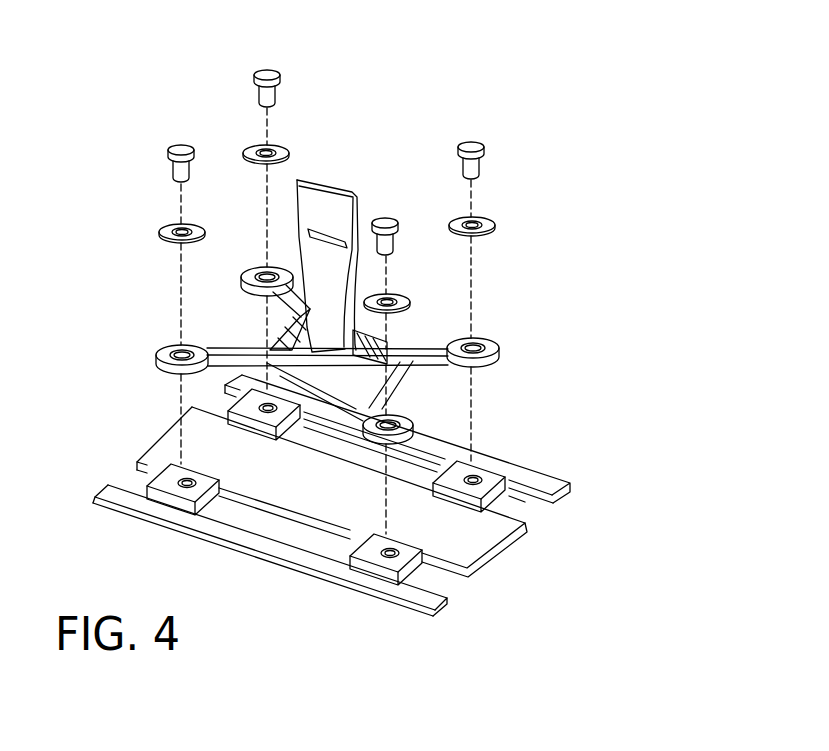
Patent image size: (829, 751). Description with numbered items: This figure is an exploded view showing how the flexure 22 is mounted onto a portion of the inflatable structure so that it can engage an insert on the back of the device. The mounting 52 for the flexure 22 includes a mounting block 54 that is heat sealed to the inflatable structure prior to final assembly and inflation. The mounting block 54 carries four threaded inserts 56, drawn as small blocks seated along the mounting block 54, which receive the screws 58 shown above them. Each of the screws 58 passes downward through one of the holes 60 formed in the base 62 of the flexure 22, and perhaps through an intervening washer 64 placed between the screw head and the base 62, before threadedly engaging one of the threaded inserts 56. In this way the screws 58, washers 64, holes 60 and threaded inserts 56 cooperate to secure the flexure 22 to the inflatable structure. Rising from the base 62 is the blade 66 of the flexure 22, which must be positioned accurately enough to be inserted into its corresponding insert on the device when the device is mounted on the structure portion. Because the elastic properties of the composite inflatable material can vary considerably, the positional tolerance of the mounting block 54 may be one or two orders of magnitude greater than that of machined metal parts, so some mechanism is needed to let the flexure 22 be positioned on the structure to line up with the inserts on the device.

The flexure 22 is at (138, 206).
The mounting 52 is at (607, 466).
The mounting block 54 is at (485, 538).
The threaded inserts 56 is at (502, 465).
The screws 58 is at (268, 62).
The holes 60 is at (500, 346).
The base 62 is at (421, 322).
The washers 64 is at (163, 241).
The blade 66 is at (326, 203).